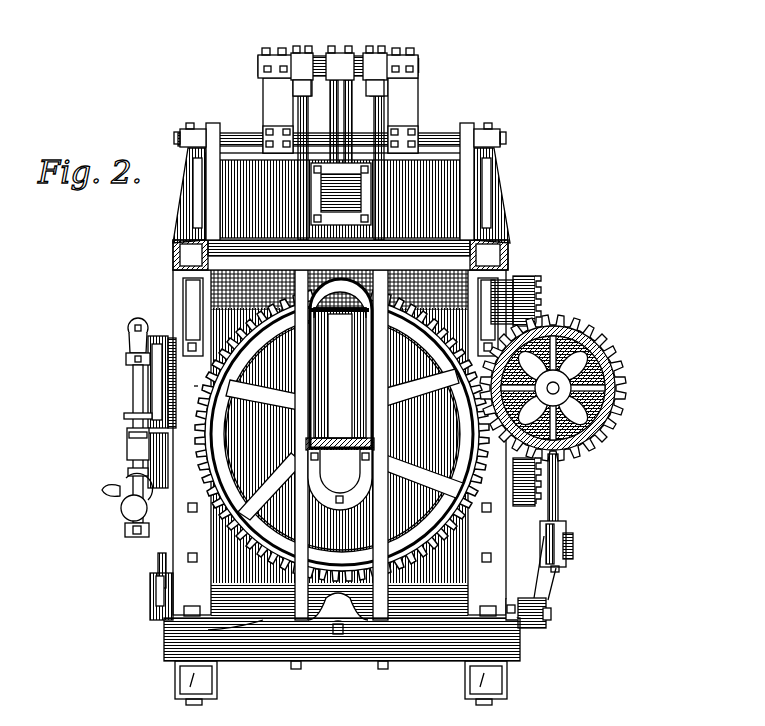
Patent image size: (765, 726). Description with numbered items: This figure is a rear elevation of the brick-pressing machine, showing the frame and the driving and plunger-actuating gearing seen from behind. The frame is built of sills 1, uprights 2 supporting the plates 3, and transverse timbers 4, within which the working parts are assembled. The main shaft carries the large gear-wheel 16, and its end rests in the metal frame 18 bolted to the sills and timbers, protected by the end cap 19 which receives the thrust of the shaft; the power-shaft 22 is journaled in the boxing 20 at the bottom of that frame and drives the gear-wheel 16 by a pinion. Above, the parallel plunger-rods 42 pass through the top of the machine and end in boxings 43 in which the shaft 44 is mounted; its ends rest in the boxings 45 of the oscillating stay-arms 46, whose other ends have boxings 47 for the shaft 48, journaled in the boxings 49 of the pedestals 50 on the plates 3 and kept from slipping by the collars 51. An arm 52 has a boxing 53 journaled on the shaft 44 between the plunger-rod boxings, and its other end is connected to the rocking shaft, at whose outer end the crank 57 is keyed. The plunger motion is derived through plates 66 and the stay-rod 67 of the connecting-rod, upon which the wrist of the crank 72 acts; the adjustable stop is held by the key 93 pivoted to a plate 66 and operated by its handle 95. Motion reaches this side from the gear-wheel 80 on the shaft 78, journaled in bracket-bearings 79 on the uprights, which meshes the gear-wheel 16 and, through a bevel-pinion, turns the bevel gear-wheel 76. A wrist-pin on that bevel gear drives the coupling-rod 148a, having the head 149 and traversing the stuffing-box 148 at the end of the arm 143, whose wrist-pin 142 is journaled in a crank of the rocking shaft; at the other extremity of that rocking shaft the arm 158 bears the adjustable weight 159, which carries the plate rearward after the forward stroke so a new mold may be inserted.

The sills 1 is at (342, 643).
The uprights 2 is at (340, 487).
The plates 3 is at (497, 250).
The transverse timbers 4 is at (342, 434).
The gear-wheel 16 is at (189, 385).
The metal frame 18 is at (368, 606).
The end cap 19 is at (370, 453).
The boxing 20 is at (242, 629).
The power-shaft 22 is at (316, 606).
The plunger-rods 42 is at (368, 113).
The boxings 43 is at (367, 40).
The shaft 44 is at (413, 58).
The boxings 45 is at (412, 46).
The oscillating stay-arms 46 is at (340, 115).
The boxings 47 is at (411, 120).
The shaft 48 is at (428, 133).
The boxings 49 is at (484, 104).
The pedestals 50 is at (494, 186).
The collars 51 is at (458, 104).
The arm 52 is at (328, 91).
The boxing 53 is at (334, 42).
The crank 57 is at (131, 448).
The plates 66 is at (116, 518).
The stay-rod 67 is at (140, 506).
The crank 72 is at (127, 388).
The bevel gear-wheel 76 is at (530, 262).
The shaft 78 is at (552, 378).
The bracket-bearings 79 is at (572, 410).
The gear-wheel 80 is at (582, 347).
The key 93 is at (120, 476).
The handle 95 is at (96, 487).
The wrist-pin 142 is at (494, 599).
The arm 143 is at (536, 575).
The stuffing-box 148 is at (566, 537).
The coupling-rod 148a is at (552, 493).
The head 149 is at (556, 562).
The arm 158 is at (150, 558).
The adjustable weight 159 is at (143, 597).